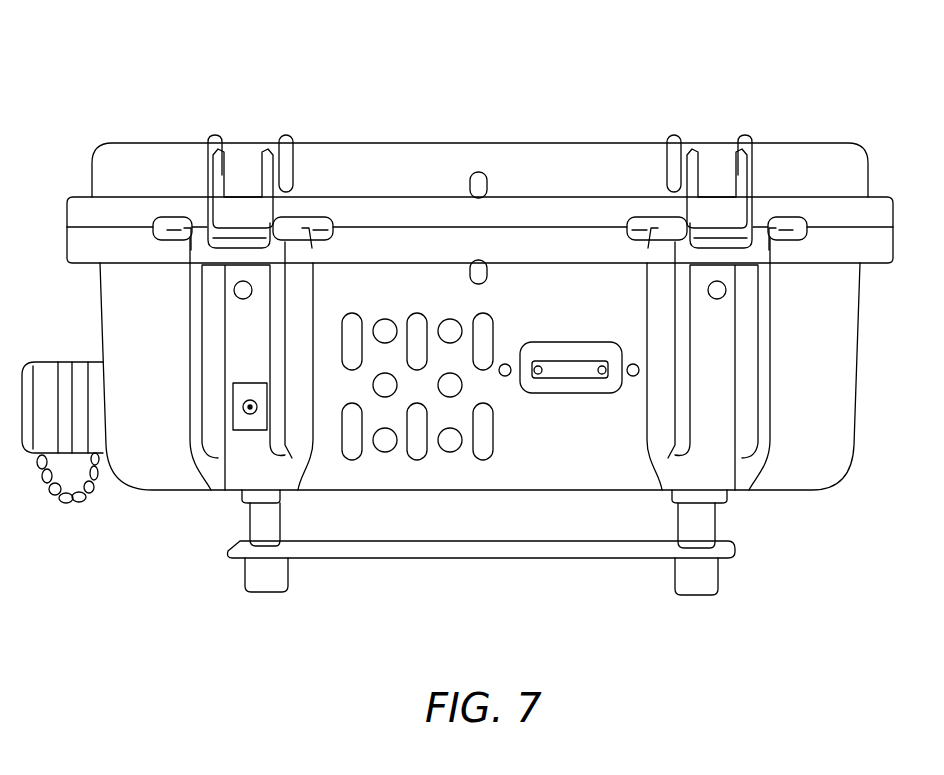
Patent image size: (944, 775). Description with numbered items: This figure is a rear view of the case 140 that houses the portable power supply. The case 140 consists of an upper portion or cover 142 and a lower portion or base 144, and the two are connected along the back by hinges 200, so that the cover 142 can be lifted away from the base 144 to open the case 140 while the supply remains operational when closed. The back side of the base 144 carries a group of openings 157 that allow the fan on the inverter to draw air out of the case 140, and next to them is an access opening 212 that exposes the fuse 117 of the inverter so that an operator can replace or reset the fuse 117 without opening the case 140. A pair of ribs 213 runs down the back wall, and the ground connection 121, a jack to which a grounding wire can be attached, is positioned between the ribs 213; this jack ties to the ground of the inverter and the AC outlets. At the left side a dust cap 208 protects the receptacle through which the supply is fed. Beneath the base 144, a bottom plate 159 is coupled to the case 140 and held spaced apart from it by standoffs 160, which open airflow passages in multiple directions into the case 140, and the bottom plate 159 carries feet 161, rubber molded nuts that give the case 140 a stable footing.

The case 140 is at (216, 93).
The cover 142 is at (472, 143).
The base 144 is at (836, 487).
The hinges 200 is at (297, 221).
The ribs 213 is at (277, 318).
The ground connection 121 is at (243, 404).
The openings 157 is at (417, 346).
The access opening 212 is at (567, 346).
The fuse 117 is at (573, 375).
The dust cap 208 is at (65, 358).
The standoffs 160 is at (290, 522).
The bottom plate 159 is at (488, 590).
The feet 161 is at (271, 575).